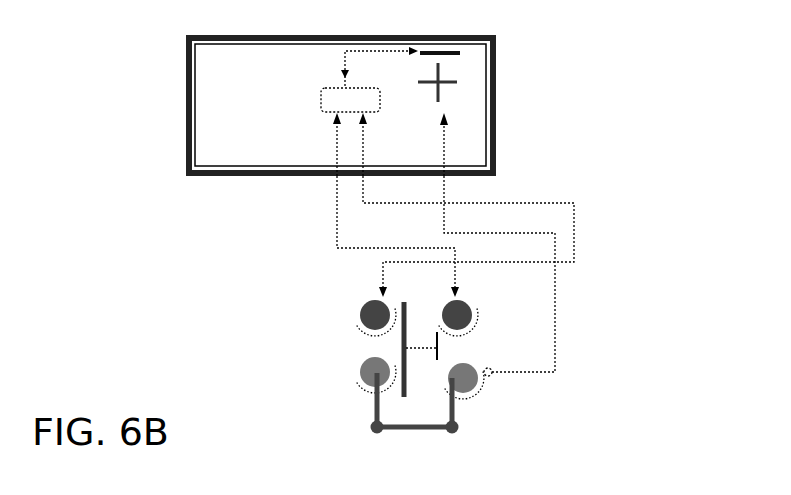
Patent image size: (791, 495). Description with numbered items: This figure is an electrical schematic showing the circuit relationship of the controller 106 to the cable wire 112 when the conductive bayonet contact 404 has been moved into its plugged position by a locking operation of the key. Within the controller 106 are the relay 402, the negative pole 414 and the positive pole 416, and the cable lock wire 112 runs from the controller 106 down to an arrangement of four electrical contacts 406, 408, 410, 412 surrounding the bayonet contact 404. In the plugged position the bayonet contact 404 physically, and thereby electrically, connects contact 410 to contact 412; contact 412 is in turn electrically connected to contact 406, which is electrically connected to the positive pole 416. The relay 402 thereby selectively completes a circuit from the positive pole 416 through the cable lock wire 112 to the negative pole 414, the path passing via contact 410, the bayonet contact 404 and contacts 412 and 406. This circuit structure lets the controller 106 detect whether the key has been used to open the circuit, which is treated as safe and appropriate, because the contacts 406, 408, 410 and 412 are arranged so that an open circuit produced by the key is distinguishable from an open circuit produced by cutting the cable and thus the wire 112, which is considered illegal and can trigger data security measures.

The controller 106 is at (186, 96).
The cable wire 112 is at (574, 205).
The relay 402 is at (321, 92).
The conductive bayonet contact 404 is at (401, 341).
The electrical contact 406 is at (470, 386).
The electrical contact 408 is at (466, 305).
The electrical contact 410 is at (365, 308).
The electrical contact 412 is at (365, 378).
The negative pole 414 is at (460, 54).
The positive pole 416 is at (457, 83).